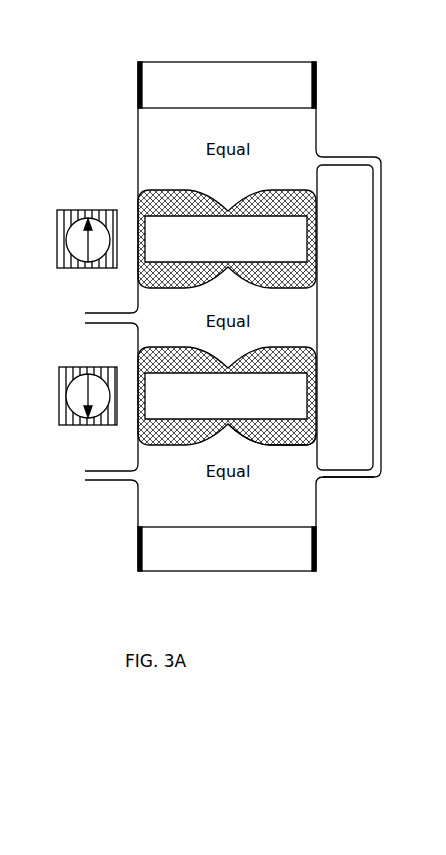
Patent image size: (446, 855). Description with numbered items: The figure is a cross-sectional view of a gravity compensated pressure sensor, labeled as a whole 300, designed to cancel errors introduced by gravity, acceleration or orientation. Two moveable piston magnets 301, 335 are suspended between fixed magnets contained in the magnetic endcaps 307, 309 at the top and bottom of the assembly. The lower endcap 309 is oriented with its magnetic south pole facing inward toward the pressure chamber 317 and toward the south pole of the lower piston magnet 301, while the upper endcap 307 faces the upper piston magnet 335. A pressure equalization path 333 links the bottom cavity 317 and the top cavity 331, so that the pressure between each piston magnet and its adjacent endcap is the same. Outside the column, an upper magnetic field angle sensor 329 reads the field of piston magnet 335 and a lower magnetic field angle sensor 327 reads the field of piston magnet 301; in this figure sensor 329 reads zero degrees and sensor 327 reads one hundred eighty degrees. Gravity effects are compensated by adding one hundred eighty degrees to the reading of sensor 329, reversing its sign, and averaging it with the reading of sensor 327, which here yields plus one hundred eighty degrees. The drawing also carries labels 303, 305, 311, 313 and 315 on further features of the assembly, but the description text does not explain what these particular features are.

The magnetic assembly 300 is at (134, 802).
The moveable piston magnet 301 is at (298, 395).
The top magnet 303 is at (193, 62).
The pole piece 305 is at (288, 447).
The magnetic endcap 307 is at (279, 70).
The magnetic endcap 309 is at (289, 569).
The upper gap 311 is at (86, 324).
The lower gap 313 is at (86, 481).
The inner return path 315 is at (303, 320).
The pressure chamber 317 is at (312, 513).
The magnetic field angle sensor 327 is at (73, 427).
The magnetic field angle sensor 329 is at (73, 270).
The top cavity 331 is at (310, 143).
The pressure equalization path 333 is at (360, 479).
The moveable piston magnet 335 is at (139, 196).